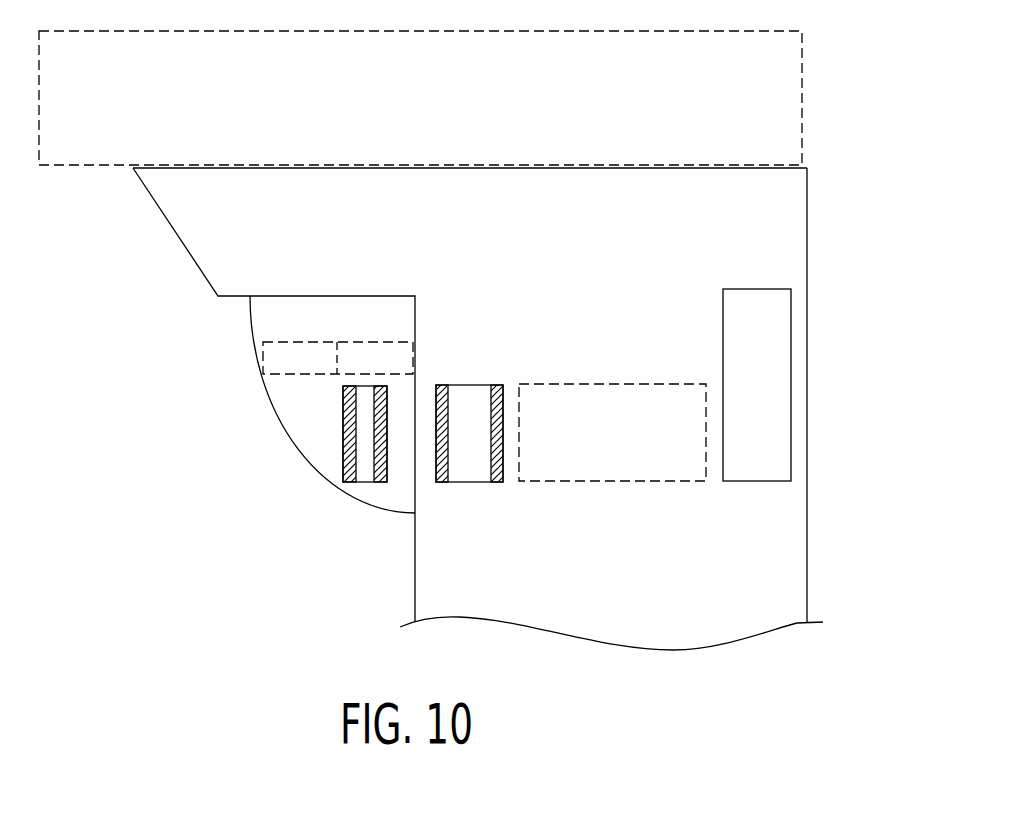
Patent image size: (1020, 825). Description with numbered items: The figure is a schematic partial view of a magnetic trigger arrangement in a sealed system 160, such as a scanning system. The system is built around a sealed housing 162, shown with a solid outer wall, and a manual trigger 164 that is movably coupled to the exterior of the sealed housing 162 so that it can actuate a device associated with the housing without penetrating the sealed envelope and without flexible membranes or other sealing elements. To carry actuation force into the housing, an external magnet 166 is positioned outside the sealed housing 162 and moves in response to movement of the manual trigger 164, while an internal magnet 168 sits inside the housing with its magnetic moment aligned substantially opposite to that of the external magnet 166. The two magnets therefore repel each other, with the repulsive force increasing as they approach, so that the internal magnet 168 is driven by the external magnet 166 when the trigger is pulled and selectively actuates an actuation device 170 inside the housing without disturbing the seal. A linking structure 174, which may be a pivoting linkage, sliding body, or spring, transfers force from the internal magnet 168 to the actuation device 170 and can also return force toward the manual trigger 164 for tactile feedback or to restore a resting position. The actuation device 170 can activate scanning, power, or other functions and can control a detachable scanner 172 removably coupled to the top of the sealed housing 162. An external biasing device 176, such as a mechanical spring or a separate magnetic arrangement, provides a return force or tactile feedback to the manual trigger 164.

The sealed system 160 is at (831, 171).
The sealed housing 162 is at (807, 542).
The manual trigger 164 is at (292, 440).
The external magnet 166 is at (362, 483).
The internal magnet 168 is at (467, 483).
The actuation device 170 is at (791, 385).
The detachable scanner 172 is at (802, 58).
The linking structure 174 is at (612, 483).
The external biasing device 176 is at (305, 375).